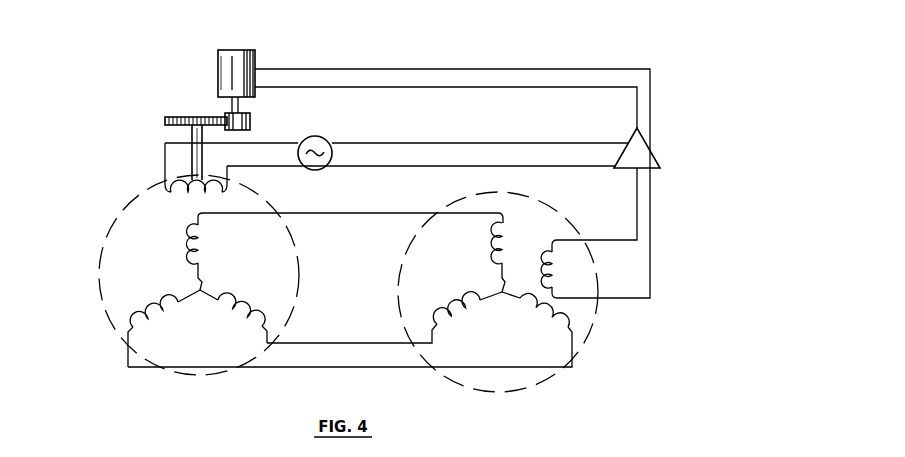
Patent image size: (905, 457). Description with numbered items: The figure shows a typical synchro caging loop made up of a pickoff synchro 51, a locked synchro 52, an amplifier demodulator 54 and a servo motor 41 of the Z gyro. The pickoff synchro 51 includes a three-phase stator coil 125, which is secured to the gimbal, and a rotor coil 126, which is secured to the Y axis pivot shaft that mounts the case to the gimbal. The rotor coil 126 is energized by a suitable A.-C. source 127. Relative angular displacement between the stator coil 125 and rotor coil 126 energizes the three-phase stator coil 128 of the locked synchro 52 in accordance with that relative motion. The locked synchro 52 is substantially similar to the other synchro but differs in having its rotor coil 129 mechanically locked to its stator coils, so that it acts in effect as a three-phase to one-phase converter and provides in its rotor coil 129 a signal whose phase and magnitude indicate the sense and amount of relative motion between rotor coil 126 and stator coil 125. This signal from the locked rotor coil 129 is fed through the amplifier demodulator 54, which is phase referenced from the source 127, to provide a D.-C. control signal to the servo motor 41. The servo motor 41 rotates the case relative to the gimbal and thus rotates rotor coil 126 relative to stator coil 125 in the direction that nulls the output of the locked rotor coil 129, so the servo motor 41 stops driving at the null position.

The servo motor 41 is at (193, 108).
The pickoff synchro 51 is at (121, 270).
The locked synchro 52 is at (428, 269).
The amplifier demodulator 54 is at (652, 160).
The three-phase stator coil 125 is at (191, 261).
The rotor coil 126 is at (168, 195).
The A.-C. source 127 is at (325, 163).
The three-phase stator coil 128 is at (497, 284).
The rotor coil 129 is at (544, 252).